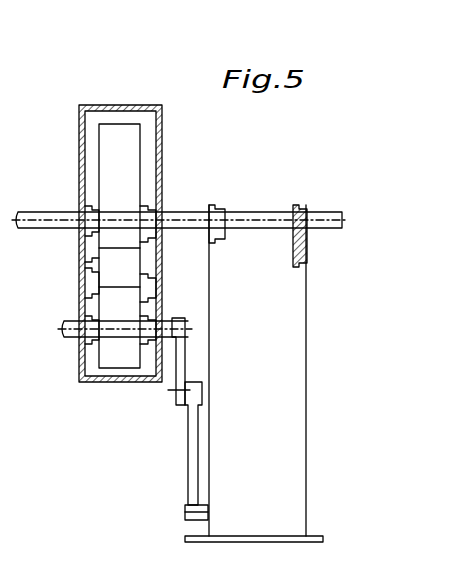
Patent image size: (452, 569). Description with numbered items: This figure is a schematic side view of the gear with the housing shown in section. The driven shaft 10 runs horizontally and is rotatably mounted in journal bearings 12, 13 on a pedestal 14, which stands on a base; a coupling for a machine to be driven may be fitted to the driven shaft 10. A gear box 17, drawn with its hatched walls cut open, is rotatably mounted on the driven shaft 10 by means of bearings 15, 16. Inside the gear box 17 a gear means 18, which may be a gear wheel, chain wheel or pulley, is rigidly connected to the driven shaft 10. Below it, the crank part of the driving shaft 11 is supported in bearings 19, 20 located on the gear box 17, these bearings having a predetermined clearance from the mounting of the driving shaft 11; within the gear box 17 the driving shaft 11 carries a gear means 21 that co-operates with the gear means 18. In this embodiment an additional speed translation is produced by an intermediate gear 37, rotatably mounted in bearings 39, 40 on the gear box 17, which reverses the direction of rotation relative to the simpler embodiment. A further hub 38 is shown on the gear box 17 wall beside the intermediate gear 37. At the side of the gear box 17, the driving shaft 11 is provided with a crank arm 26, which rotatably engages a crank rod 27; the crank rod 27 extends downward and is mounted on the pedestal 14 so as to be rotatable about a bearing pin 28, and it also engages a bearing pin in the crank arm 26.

The driven shaft 10 is at (186, 220).
The crank part of the driving shaft 11 is at (72, 332).
The journal bearing 12 is at (300, 208).
The journal bearing 13 is at (224, 212).
The pedestal 14 is at (250, 519).
The bearing 15 is at (161, 200).
The bearing 16 is at (82, 204).
The gear box 17 is at (115, 105).
The gear means 18 is at (113, 160).
The bearing 19 is at (155, 318).
The bearing 20 is at (88, 332).
The gear means 21 is at (118, 350).
The crank arm 26 is at (182, 357).
The crank rod 27 is at (192, 458).
The bearing pin 28 is at (190, 507).
The intermediate gear 37 is at (128, 265).
The hub 38 is at (90, 263).
The bearing 39 is at (92, 299).
The bearing 40 is at (150, 280).